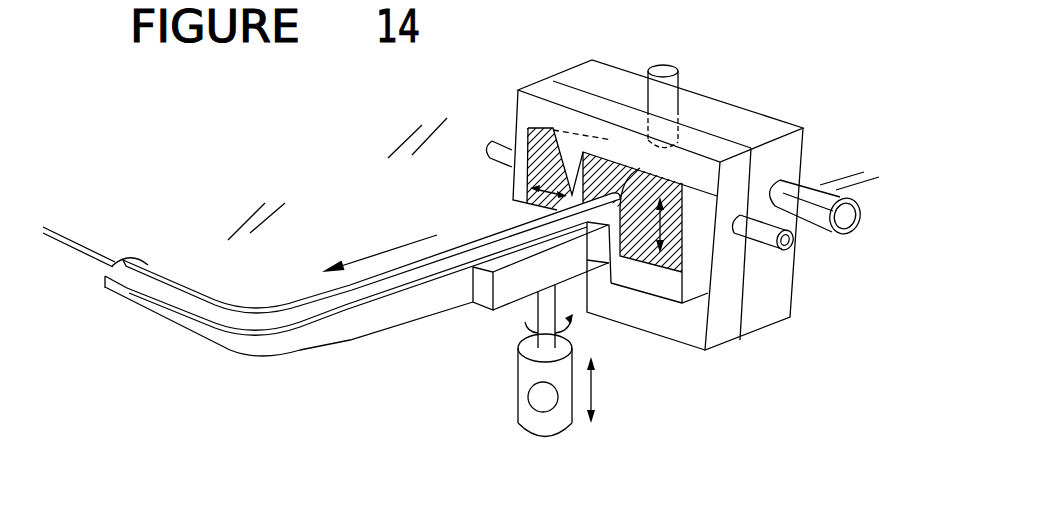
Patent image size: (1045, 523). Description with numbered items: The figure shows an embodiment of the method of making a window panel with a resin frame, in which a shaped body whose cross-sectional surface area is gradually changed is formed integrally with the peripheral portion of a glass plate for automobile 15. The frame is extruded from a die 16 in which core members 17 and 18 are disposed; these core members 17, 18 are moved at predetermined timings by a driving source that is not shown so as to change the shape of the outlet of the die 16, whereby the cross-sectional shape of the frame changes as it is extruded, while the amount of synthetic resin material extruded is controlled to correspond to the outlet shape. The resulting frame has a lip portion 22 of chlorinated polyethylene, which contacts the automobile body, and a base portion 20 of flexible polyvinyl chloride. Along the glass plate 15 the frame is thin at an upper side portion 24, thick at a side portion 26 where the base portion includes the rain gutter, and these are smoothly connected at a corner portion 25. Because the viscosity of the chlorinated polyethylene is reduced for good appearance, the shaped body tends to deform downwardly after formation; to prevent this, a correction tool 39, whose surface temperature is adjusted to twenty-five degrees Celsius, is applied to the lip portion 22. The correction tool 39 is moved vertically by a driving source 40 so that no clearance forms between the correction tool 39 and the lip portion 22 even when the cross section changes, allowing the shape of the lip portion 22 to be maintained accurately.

The glass plate for automobile 15 is at (275, 177).
The die 16 is at (711, 120).
The core member 17 is at (647, 253).
The core member 18 is at (522, 183).
The base portion 20 is at (128, 262).
The lip portion 22 is at (103, 262).
The upper side portion 24 is at (127, 290).
The corner portion 25 is at (257, 355).
The side portion 26 is at (443, 287).
The correction tool 39 is at (485, 303).
The driving source 40 is at (553, 420).